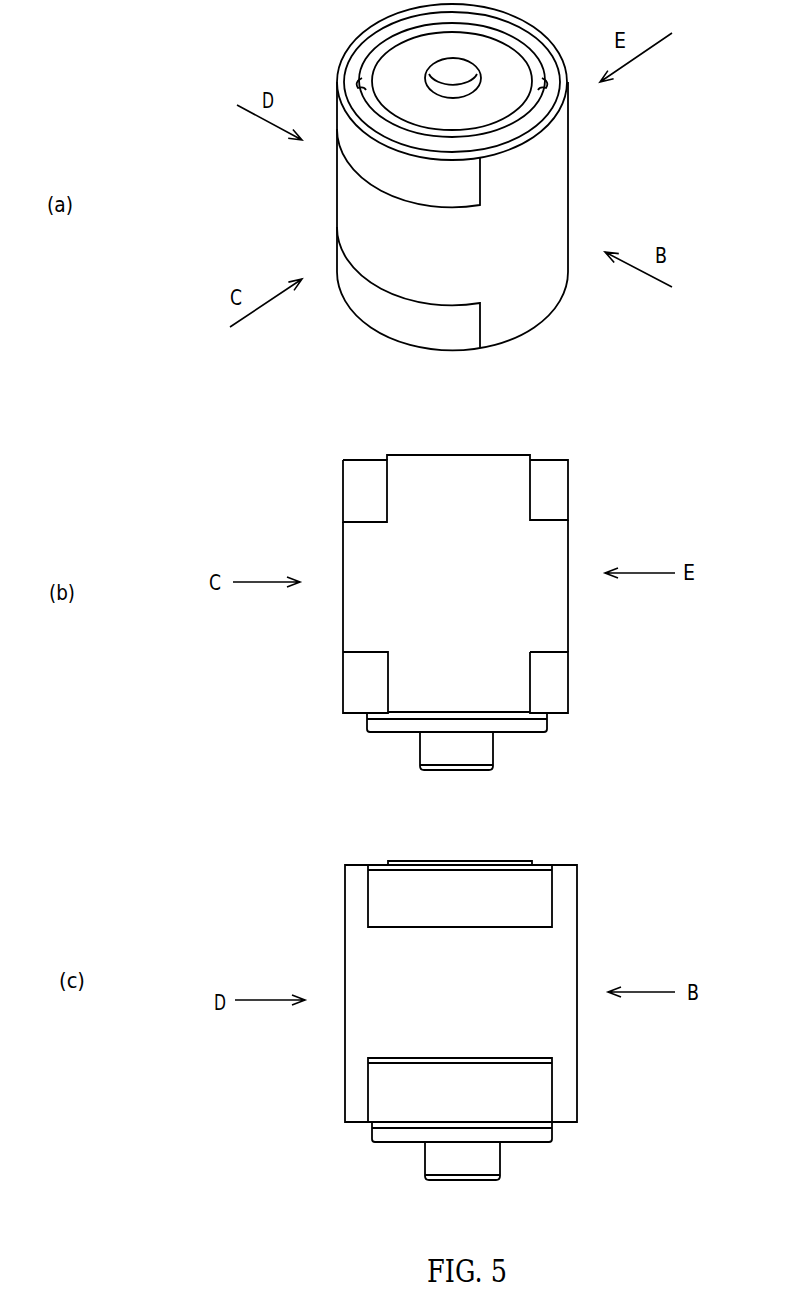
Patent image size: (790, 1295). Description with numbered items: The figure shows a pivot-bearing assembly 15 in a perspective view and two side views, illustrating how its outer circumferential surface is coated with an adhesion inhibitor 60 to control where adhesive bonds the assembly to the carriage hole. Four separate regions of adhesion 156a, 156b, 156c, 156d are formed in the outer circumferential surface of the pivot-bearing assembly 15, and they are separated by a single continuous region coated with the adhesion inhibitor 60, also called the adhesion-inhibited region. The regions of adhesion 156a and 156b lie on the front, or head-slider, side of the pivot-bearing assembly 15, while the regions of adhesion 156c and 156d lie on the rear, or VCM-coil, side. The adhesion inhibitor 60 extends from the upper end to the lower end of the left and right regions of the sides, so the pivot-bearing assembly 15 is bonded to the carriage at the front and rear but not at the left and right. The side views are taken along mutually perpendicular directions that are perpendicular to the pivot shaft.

The pivot-bearing assembly 15 is at (441, 592).
The adhesion inhibitor 60 is at (515, 256).
The region of adhesion 156a is at (568, 482).
The region of adhesion 156b is at (568, 676).
The region of adhesion 156c is at (433, 184).
The region of adhesion 156d is at (438, 333).